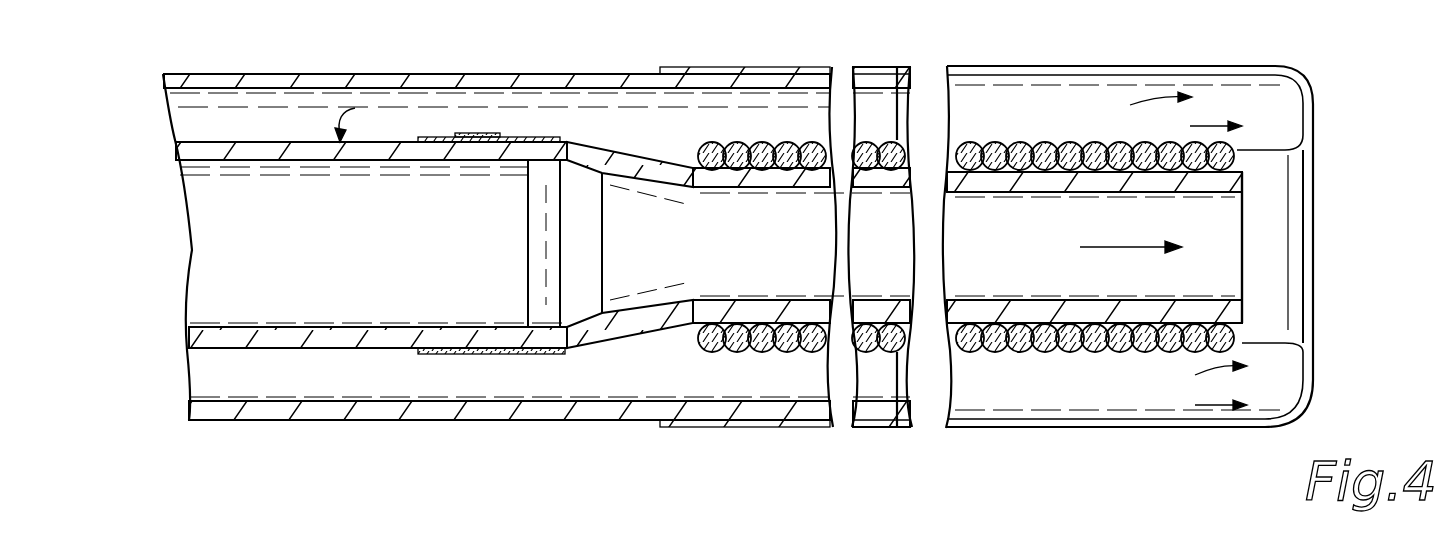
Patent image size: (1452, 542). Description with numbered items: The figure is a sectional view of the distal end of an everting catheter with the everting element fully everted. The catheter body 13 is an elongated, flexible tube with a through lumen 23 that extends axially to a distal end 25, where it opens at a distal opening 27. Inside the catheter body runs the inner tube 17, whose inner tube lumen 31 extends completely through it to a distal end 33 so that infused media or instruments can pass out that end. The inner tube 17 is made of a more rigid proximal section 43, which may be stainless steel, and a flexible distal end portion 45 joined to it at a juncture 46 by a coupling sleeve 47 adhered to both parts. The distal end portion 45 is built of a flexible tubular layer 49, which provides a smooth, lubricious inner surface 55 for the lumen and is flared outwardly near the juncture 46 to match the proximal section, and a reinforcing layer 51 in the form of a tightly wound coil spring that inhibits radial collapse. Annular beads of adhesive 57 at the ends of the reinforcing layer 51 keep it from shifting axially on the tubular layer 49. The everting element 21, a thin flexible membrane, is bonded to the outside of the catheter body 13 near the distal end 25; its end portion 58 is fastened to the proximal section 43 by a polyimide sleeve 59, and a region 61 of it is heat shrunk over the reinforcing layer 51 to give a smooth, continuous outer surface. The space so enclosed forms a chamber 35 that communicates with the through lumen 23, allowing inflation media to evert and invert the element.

The catheter body 13 is at (196, 73).
The inner tube 17 is at (364, 120).
The everting element 21 is at (1262, 66).
The through lumen 23 is at (205, 112).
The distal end 25 is at (904, 428).
The distal opening 27 is at (887, 120).
The inner tube lumen 31 is at (215, 232).
The distal end 33 is at (1246, 312).
The chamber 35 is at (1280, 133).
The proximal section 43 is at (220, 152).
The distal end portion 45 is at (745, 195).
The juncture 46 is at (583, 140).
The coupling sleeve 47 is at (540, 172).
The tubular layer 49 is at (1075, 300).
The reinforcing layer 51 is at (1032, 168).
The inner surface 55 is at (1148, 186).
The annular beads of adhesive 57 is at (686, 150).
The end portion 58 is at (486, 354).
The polyimide sleeve 59 is at (462, 137).
The region 61 is at (1140, 353).